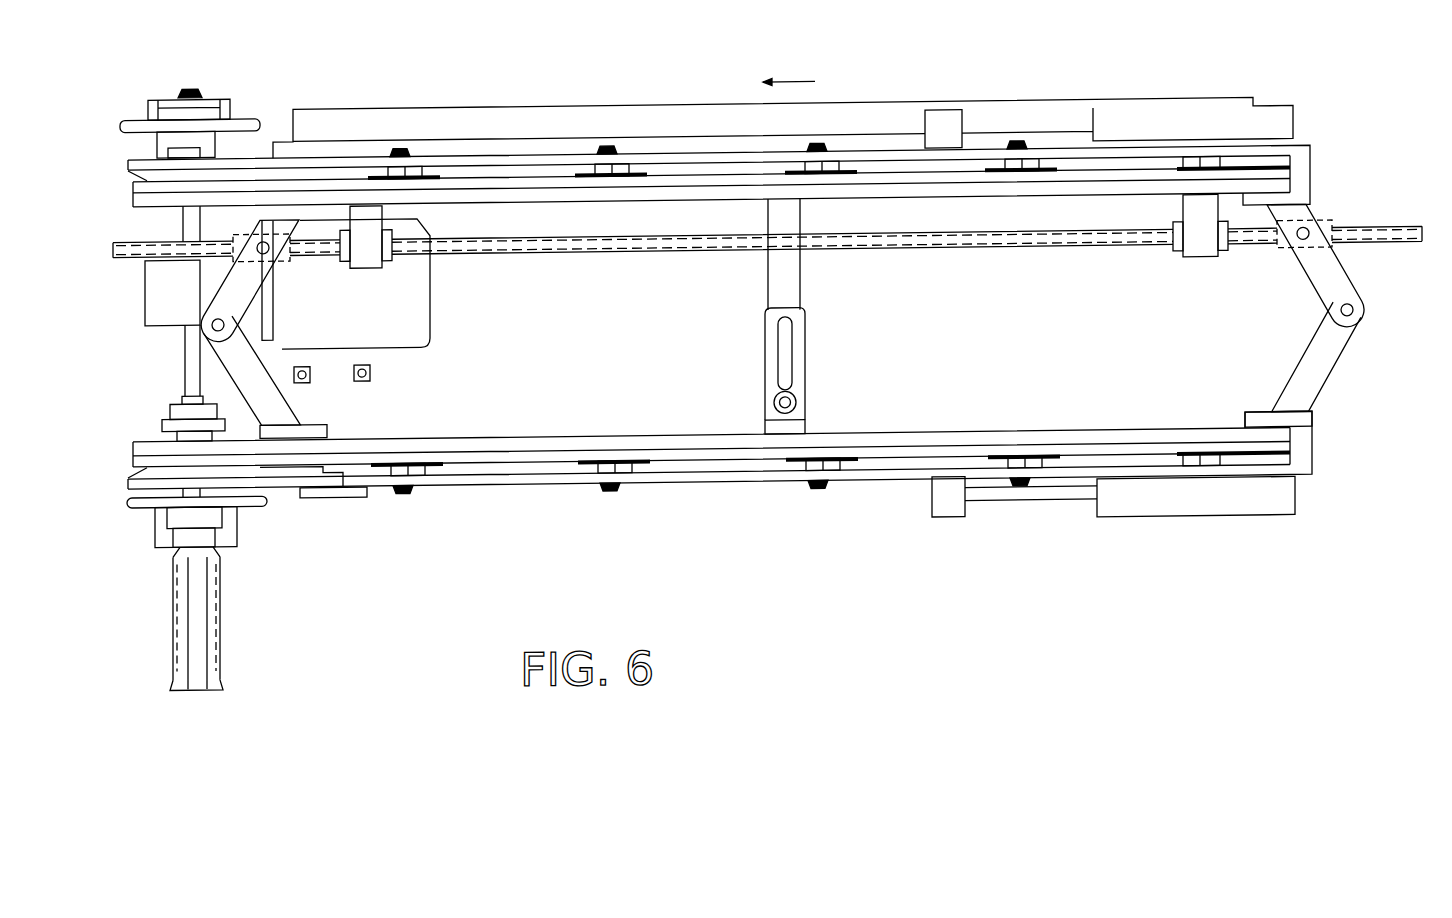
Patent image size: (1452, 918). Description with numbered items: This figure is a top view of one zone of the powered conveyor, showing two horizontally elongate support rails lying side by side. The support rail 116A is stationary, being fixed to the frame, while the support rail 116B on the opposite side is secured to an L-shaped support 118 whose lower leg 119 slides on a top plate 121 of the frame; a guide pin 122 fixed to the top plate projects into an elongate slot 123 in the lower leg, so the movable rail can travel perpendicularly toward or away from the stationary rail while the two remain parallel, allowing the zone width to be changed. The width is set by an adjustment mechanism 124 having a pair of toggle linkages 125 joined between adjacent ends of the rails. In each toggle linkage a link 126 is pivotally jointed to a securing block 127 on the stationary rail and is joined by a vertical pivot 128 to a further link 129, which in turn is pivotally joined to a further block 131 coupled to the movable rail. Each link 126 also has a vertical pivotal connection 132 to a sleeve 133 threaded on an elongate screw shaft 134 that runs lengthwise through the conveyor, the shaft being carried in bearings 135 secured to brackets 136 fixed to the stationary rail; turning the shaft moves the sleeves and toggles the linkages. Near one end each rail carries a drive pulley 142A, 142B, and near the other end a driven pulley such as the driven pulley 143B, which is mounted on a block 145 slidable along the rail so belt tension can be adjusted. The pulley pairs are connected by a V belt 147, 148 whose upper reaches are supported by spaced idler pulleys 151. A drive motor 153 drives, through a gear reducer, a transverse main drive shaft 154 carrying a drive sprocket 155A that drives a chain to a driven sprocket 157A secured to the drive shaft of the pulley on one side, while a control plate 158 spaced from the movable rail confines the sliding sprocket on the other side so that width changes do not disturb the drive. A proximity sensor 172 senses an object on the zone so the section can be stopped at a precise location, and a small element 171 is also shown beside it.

The support rail 116A is at (483, 172).
The support rail 116B is at (680, 485).
The L-shaped support 118 is at (800, 436).
The lower leg 119 is at (797, 341).
The top plate 121 is at (793, 288).
The guide pin 122 is at (782, 365).
The elongate slot 123 is at (776, 413).
The adjustment mechanism 124 is at (1355, 226).
The toggle linkage 125 is at (1296, 372).
The link 126 is at (245, 292).
The securing block 127 is at (1310, 178).
The vertical pivot 128 is at (1353, 326).
The further link 129 is at (240, 354).
The further block 131 is at (1305, 452).
The vertical pivotal connection 132 is at (1300, 255).
The sleeve 133 is at (1325, 240).
The screw shaft 134 is at (915, 272).
The bearing 135 is at (393, 260).
The bracket 136 is at (368, 263).
The drive pulley 142A is at (128, 162).
The drive pulley 142B is at (135, 478).
The driven pulley 143B is at (1212, 478).
The block 145 is at (1157, 518).
The V belt 147 is at (648, 185).
The V belt 148 is at (568, 203).
The idler pulley 151 is at (630, 176).
The drive motor 153 is at (405, 339).
The main drive shaft 154 is at (200, 608).
The drive sprocket 155A is at (240, 126).
The driven sprocket 157A is at (180, 128).
The control plate 158 is at (168, 541).
The adjustment screw 171 is at (368, 378).
The proximity sensor 172 is at (305, 380).